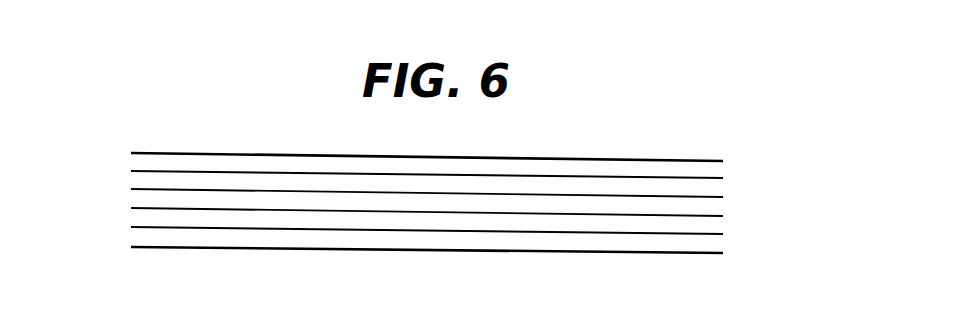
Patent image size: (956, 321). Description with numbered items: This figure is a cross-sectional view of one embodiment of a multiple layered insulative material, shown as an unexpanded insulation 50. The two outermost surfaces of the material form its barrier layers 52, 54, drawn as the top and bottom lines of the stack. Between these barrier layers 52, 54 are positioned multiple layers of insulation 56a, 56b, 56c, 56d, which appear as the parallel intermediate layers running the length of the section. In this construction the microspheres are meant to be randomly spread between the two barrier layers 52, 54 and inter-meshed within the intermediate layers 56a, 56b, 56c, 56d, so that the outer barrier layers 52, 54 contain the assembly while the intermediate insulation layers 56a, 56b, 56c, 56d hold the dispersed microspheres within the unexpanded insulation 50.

The unexpanded insulation 50 is at (576, 139).
The barrier layer 52 is at (723, 161).
The barrier layer 54 is at (707, 255).
The layer of insulation 56a is at (131, 171).
The layer of insulation 56b is at (723, 197).
The layer of insulation 56c is at (131, 208).
The layer of insulation 56d is at (723, 234).